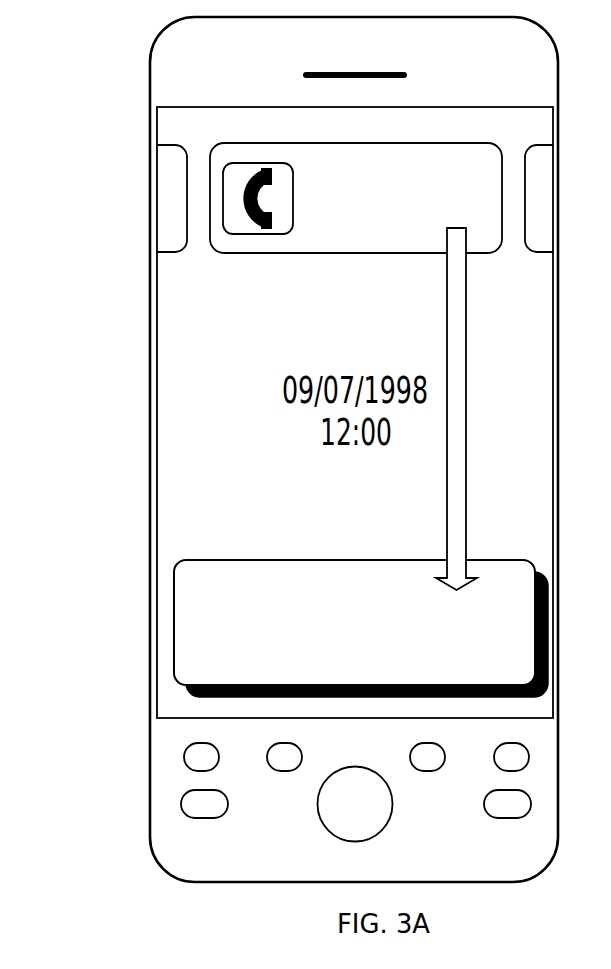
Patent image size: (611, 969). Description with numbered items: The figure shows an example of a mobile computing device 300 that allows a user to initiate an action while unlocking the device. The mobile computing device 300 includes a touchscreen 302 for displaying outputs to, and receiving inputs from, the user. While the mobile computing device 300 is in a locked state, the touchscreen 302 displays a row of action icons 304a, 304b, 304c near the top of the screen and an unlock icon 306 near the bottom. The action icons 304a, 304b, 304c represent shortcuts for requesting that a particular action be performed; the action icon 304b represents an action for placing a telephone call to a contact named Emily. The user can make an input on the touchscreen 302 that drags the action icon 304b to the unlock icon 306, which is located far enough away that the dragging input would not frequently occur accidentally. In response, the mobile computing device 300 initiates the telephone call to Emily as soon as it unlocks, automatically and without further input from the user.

The mobile computing device 300 is at (152, 57).
The touchscreen 302 is at (248, 107).
The action icon 304a is at (182, 253).
The action icon 304b is at (345, 253).
The action icon 304c is at (527, 253).
The unlock icon 306 is at (263, 560).